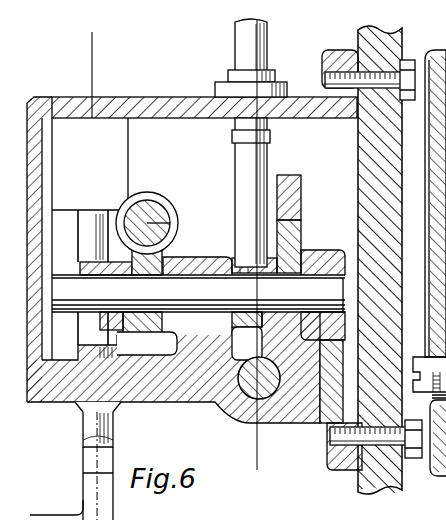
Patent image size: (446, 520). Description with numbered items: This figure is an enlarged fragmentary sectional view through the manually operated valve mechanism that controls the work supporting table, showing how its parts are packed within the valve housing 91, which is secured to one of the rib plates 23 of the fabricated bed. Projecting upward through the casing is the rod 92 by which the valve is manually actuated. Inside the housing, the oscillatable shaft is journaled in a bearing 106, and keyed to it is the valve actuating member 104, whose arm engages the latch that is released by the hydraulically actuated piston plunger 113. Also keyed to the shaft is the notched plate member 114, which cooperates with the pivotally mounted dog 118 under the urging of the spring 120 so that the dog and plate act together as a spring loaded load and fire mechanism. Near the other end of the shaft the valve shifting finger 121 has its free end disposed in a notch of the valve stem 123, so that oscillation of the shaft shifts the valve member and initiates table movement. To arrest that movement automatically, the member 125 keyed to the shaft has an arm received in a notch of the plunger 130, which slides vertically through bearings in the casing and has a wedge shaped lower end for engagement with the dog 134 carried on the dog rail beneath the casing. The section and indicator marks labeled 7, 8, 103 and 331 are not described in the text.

The section line 7- 7 is at (247, 45).
The section line 8- 8 is at (108, 33).
The rib plate 23 is at (394, 45).
The housing 91 is at (197, 86).
The rod 92 is at (244, 164).
The hub member 103 is at (340, 250).
The valve actuating member 104 is at (259, 331).
The bearing 106 is at (227, 257).
The hydraulically actuated piston plunger 113 is at (280, 372).
The plate member 114 is at (305, 228).
The dog 118 is at (302, 190).
The spring 120 is at (93, 510).
The valve shifting finger 121 is at (166, 233).
The valve stem 123 is at (144, 203).
The member 125 is at (121, 332).
The plunger 130 is at (113, 430).
The dog 134 is at (87, 489).
The frame plate lower portion 331 is at (368, 505).